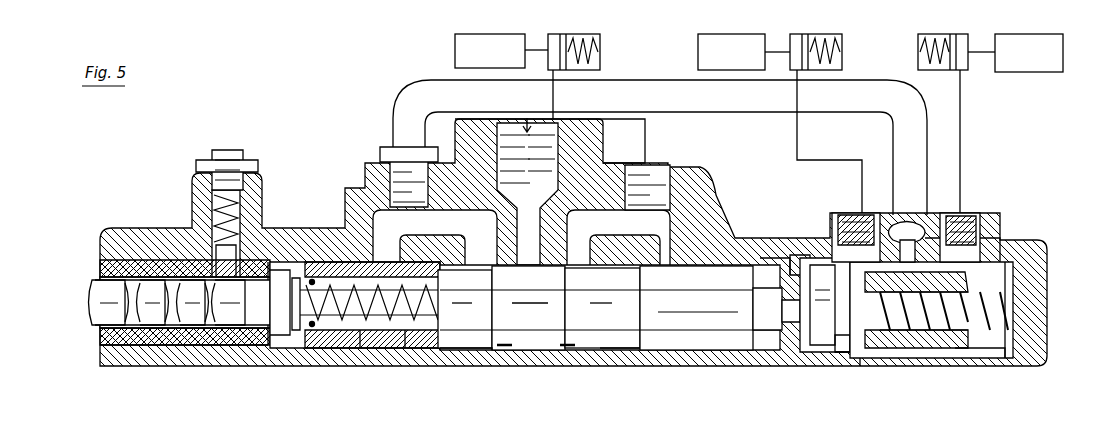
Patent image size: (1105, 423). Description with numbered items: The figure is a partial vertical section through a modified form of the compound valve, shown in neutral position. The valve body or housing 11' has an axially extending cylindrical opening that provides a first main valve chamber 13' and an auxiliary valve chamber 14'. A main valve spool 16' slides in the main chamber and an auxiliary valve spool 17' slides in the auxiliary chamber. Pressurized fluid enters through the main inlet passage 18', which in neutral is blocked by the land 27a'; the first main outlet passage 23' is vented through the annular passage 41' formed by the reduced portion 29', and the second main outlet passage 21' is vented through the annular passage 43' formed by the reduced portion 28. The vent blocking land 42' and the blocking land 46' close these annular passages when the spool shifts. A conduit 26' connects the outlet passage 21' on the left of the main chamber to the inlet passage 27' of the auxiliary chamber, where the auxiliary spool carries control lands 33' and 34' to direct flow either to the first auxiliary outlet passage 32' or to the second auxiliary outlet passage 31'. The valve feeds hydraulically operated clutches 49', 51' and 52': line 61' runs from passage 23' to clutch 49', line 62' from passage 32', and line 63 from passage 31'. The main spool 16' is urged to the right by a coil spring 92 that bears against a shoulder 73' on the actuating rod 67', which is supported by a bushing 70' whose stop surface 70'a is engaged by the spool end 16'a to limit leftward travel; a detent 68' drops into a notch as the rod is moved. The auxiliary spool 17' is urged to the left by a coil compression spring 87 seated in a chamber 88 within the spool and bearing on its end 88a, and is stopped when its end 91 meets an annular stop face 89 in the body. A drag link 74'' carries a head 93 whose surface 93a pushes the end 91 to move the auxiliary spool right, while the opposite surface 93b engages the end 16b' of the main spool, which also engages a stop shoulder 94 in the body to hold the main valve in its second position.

The valve body 11' is at (590, 242).
The first main valve chamber 13' is at (610, 350).
The auxiliary valve chamber 14' is at (931, 333).
The main valve spool 16' is at (610, 332).
The end of main valve spool 16'a is at (355, 339).
The end of main spool 16b' is at (771, 247).
The auxiliary valve spool 17' is at (952, 304).
The main inlet passage 18' is at (566, 191).
The second main outlet passage 21' is at (435, 239).
The first main outlet passage 23' is at (659, 231).
The conduit 26' is at (653, 128).
The auxiliary inlet passage 27' is at (945, 219).
The land 27a' is at (528, 308).
The reduced portion of main valve spool 28 is at (465, 309).
The reduced portion of main valve spool 29' is at (602, 308).
The second auxiliary outlet passage 31' is at (987, 227).
The first auxiliary outlet passage 32' is at (853, 222).
The control land 33' is at (841, 374).
The control land 34' is at (978, 376).
The annular passage 41' is at (620, 369).
The vent blocking land 42' is at (696, 329).
The annular passage 43' is at (457, 375).
The blocking land 46' is at (372, 368).
The hydraulically operated clutch 49' is at (508, 76).
The hydraulically operated clutch 51' is at (770, 42).
The hydraulically operated clutch 52' is at (1007, 53).
The line 61' is at (573, 141).
The line 62' is at (829, 142).
The line 63 is at (960, 152).
The actuating rod 67' is at (167, 333).
The detent 68' is at (251, 217).
The bushing 70' is at (185, 332).
The stop surface 70'a is at (249, 328).
The shoulder 73' is at (369, 302).
The drag link 74'' is at (330, 335).
The coil compression spring 87 is at (985, 310).
The chamber 88 is at (955, 325).
The end of chamber 88a is at (878, 350).
The annular stop face 89 is at (836, 344).
The end of auxiliary spool 91 is at (810, 296).
The coil compression spring 92 is at (410, 335).
The head of drag link 93 is at (330, 332).
The surface of drag link head 93a is at (790, 340).
The surface of drag link head 93b is at (756, 325).
The stop shoulder 94 is at (798, 258).